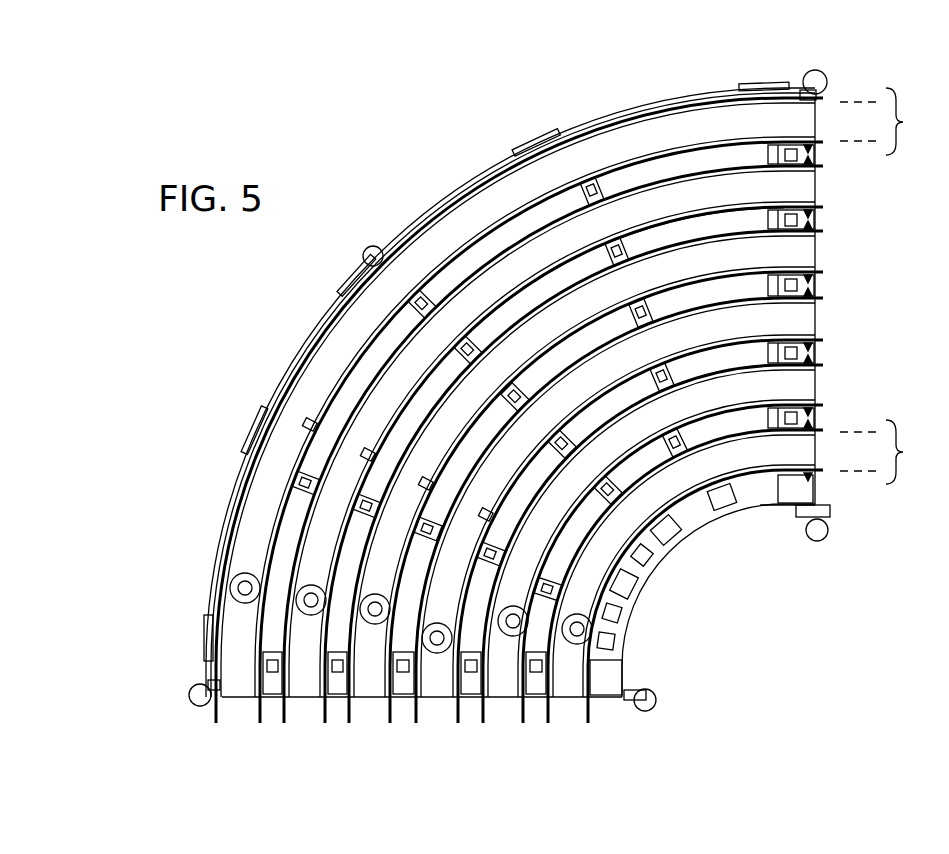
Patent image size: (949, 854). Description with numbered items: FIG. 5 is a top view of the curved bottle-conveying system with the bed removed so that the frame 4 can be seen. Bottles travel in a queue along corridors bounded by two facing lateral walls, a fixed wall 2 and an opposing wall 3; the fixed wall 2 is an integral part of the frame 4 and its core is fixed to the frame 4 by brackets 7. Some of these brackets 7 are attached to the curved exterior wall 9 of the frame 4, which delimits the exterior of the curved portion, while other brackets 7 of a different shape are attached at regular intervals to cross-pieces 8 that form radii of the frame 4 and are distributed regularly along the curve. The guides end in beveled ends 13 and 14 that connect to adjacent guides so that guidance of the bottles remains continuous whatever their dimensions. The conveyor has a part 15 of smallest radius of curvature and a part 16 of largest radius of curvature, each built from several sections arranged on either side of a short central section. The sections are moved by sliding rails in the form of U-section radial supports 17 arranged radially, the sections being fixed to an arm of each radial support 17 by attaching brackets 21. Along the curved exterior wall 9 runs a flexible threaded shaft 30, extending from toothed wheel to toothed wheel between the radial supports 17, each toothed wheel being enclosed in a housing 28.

The fixed wall 2 is at (700, 99).
The lateral wall 3 is at (661, 154).
The frame 4 is at (830, 487).
The brackets 7 is at (787, 90).
The cross-pieces 8 is at (597, 180).
The curved exterior wall 9 is at (456, 200).
The ends of the guides 13 is at (258, 702).
The ends of the guides 14 is at (227, 702).
The part of the conveyor having the smallest radius of curvature 15 is at (888, 452).
The part of the conveyor having the largest radius of curvature 16 is at (888, 121).
The radial support 17 is at (606, 650).
The attaching brackets 21 is at (572, 250).
The housing 28 is at (763, 82).
The flexible threaded shaft 30 is at (208, 566).